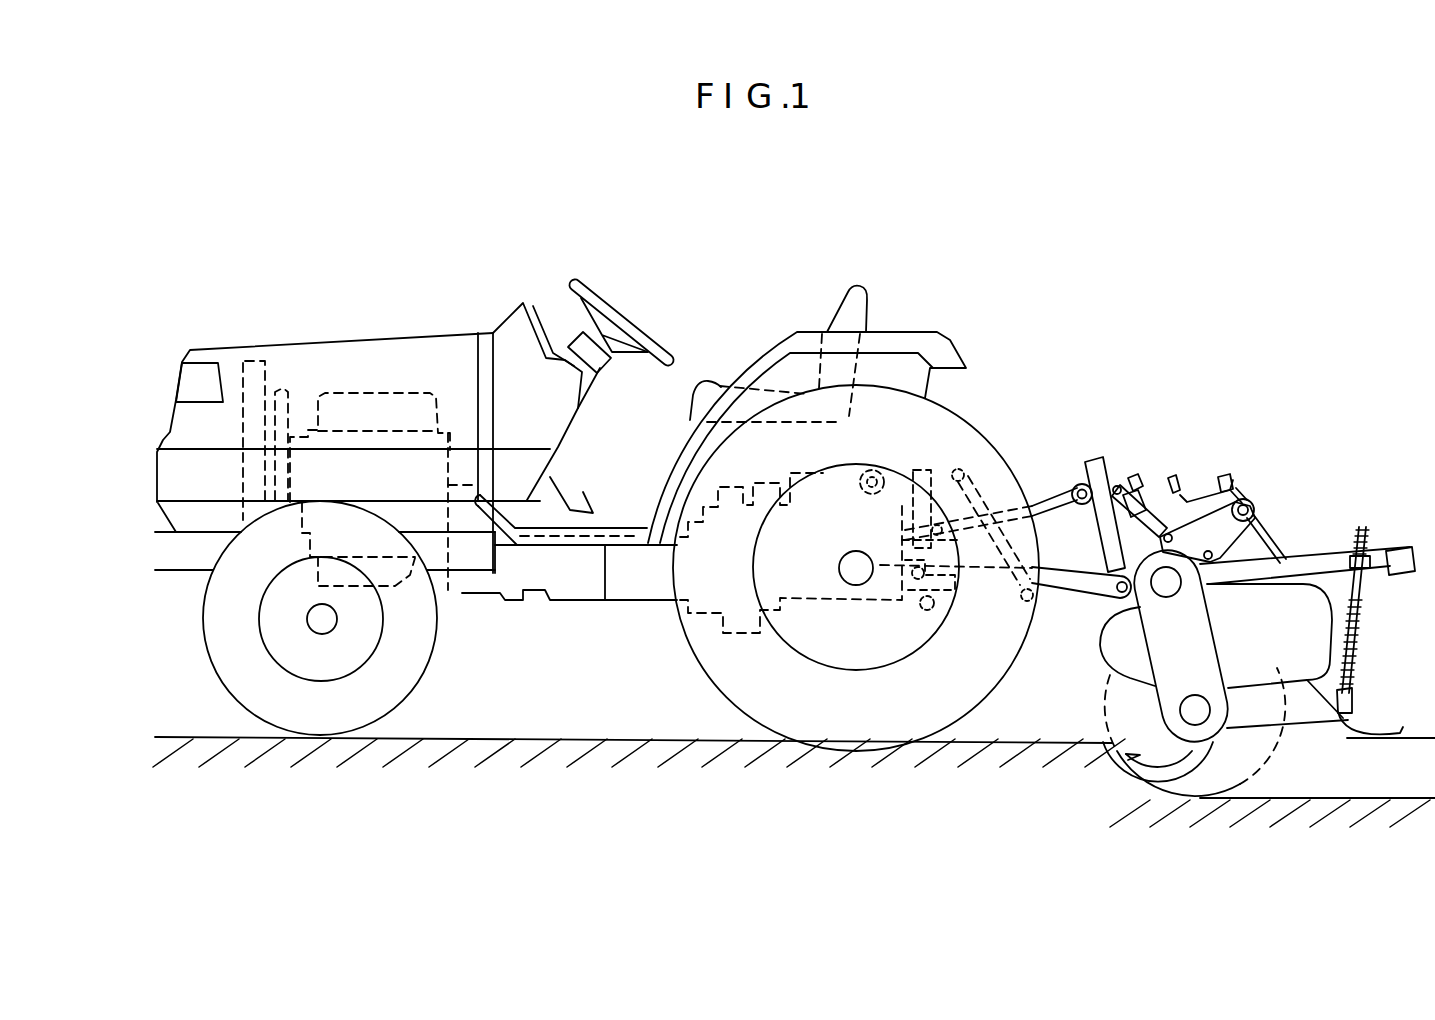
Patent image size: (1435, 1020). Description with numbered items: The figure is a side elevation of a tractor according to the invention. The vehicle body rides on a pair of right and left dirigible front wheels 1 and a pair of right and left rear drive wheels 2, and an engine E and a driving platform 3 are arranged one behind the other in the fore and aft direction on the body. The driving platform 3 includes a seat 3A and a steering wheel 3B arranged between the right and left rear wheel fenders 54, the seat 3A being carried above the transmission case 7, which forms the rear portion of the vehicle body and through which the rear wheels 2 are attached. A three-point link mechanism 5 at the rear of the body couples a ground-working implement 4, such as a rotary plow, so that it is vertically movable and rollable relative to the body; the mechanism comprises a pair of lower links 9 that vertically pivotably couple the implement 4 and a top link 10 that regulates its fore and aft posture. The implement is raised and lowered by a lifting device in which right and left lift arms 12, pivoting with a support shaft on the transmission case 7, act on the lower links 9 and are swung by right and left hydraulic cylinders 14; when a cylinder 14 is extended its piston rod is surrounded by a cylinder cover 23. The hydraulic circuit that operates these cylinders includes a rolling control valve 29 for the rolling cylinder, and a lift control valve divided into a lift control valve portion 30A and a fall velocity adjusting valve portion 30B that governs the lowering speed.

The front wheels 1 is at (230, 688).
The rear drive wheels 2 is at (740, 696).
The driving platform 3 is at (723, 296).
The seat 3A is at (840, 308).
The steering wheel 3B is at (622, 314).
The ground-working implement 4 is at (1300, 546).
The three-point link mechanism 5 is at (989, 491).
The transmission case 7 is at (814, 600).
The lower links 9 is at (1087, 593).
The top link 10 is at (1053, 500).
The lift arms 12 is at (942, 466).
The hydraulic cylinders 14 is at (923, 596).
The cylinder cover 23 is at (905, 521).
The rolling control valve 29 is at (808, 470).
The lift control valve portion 30A is at (755, 484).
The fall velocity adjusting valve portion 30B is at (712, 484).
The rear wheel fenders 54 is at (913, 342).
The engine E is at (370, 392).